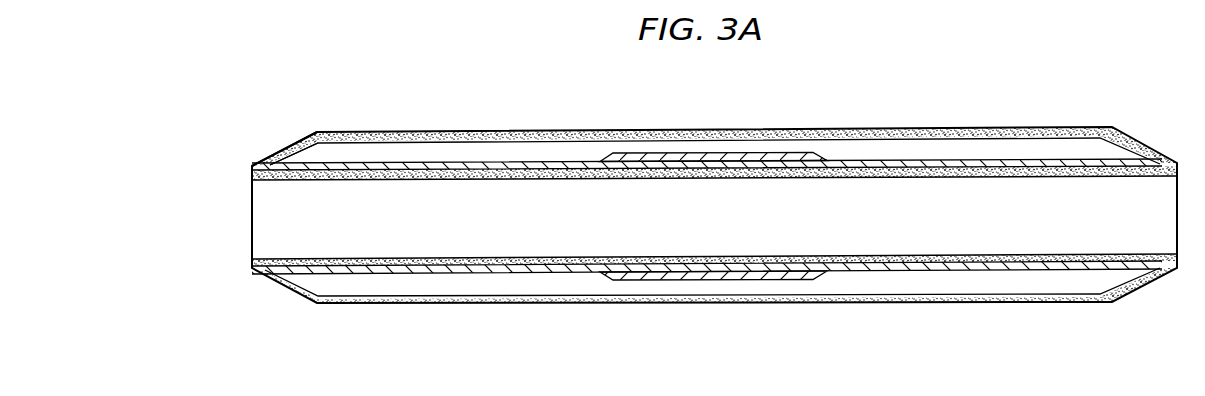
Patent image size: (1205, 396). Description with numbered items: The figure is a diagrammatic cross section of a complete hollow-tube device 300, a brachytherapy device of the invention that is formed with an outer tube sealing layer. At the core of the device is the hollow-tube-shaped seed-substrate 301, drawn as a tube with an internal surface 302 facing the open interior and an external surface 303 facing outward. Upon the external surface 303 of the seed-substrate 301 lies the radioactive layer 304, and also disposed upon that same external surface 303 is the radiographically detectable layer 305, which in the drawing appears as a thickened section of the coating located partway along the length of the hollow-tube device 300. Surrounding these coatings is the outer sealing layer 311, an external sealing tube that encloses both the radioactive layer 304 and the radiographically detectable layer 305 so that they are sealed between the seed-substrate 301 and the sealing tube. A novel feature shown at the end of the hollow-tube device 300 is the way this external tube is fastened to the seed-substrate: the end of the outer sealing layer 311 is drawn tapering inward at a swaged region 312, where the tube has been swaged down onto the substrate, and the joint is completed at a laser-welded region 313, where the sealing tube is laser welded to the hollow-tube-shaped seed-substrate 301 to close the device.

The hollow-tube device 300 is at (715, 303).
The hollow-tube-shaped seed-substrate 301 is at (927, 261).
The internal surface 302 is at (997, 190).
The external surface 303 is at (918, 156).
The radioactive layer 304 is at (1012, 268).
The radiographically detectable layer 305 is at (660, 263).
The outer sealing layer 311 is at (680, 130).
The swaged region 312 is at (266, 160).
The laser-welded region 313 is at (238, 169).